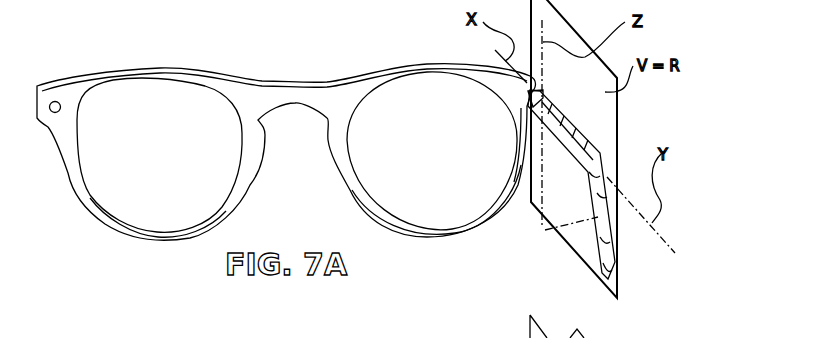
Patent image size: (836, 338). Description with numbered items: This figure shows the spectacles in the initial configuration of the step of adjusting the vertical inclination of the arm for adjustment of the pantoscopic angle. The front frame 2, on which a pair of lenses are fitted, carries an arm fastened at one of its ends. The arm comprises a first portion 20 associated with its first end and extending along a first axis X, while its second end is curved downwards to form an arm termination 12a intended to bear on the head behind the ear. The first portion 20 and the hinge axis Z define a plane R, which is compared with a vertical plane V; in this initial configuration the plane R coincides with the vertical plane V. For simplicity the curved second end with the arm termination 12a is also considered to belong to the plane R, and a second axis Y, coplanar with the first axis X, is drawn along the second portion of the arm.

The front frame 2 is at (249, 79).
The first portion 20 is at (578, 138).
The arm termination 12a is at (545, 229).